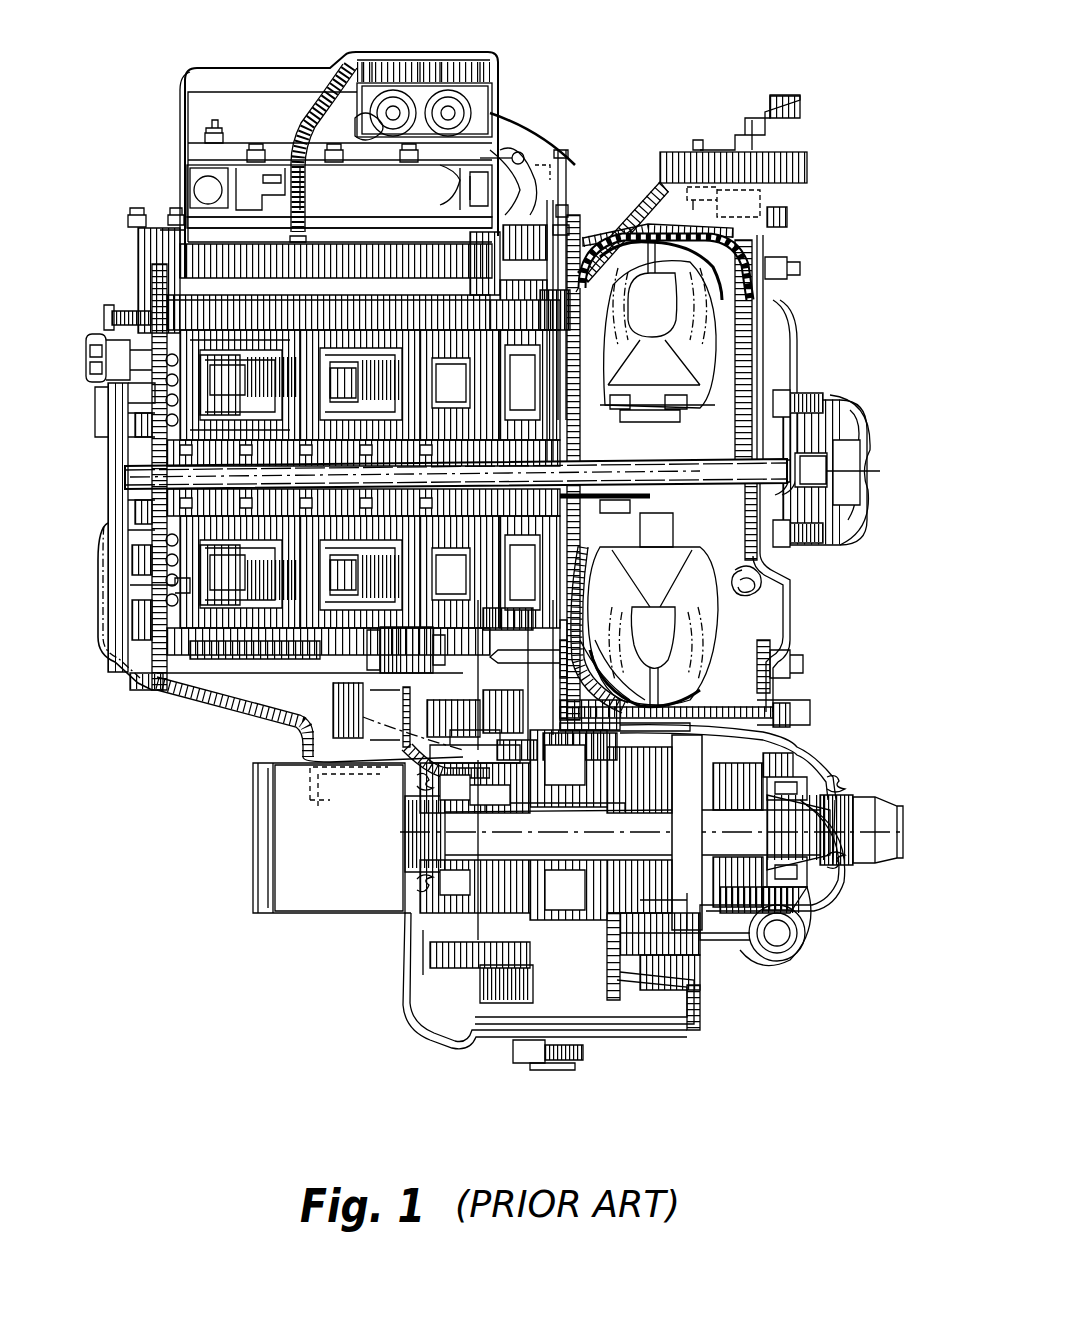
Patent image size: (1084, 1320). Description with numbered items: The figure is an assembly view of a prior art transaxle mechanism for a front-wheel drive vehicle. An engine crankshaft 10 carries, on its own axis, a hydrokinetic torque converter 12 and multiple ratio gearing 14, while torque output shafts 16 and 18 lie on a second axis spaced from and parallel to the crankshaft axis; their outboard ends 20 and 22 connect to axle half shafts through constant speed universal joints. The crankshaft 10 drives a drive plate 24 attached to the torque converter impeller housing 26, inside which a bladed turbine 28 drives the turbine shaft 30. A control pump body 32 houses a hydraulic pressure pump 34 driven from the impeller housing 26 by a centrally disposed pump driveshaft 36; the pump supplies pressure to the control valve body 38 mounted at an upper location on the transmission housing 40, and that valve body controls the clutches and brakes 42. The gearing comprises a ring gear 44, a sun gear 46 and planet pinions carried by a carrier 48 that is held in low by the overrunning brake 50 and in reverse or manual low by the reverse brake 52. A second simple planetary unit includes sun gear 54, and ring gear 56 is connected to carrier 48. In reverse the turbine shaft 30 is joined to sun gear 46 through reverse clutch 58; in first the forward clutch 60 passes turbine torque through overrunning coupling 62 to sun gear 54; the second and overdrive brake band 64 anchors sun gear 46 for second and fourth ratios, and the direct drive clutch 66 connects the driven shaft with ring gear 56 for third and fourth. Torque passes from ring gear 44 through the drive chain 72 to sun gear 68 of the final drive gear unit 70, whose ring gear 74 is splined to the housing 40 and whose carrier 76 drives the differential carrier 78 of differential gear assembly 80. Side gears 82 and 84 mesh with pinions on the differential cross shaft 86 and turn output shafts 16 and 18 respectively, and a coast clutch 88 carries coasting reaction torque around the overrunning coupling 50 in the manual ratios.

The crankshaft 10 is at (836, 455).
The hydrokinetic torque converter 12 is at (712, 322).
The multiple ratio gearing 14 is at (452, 272).
The torque output shaft 16 is at (792, 815).
The torque output shaft 18 is at (500, 848).
The outboard end 20 is at (880, 870).
The outboard end 22 is at (310, 913).
The drive plate 24 is at (780, 325).
The torque converter impeller housing 26 is at (676, 215).
The bladed turbine 28 is at (690, 255).
The turbine shaft 30 is at (492, 648).
The transmission case 32 is at (106, 447).
The hydraulic pressure pump 34 is at (138, 522).
The pump driveshaft 36 is at (162, 557).
The control valve body 38 is at (256, 110).
The transmission housing 40 is at (595, 240).
The clutches and brakes 42 is at (262, 600).
The ring gear 44 is at (520, 152).
The sun gear 46 is at (563, 148).
The carrier 48 is at (398, 312).
The overrunning brake 50 is at (352, 325).
The reverse brake 52 is at (322, 334).
The sun gear 54 is at (464, 618).
The ring gear 56 is at (402, 272).
The reverse clutch 58 is at (165, 300).
The forward clutch 60 is at (252, 332).
The overrunning coupling 62 is at (226, 332).
The second and overdrive brake band 64 is at (172, 642).
The direct drive clutch 66 is at (152, 340).
The sun gear 68 is at (760, 905).
The final drive gear unit 70 is at (512, 1000).
The drive chain 72 is at (492, 985).
The ring gear 74 is at (600, 985).
The carrier 76 is at (675, 990).
The differential carrier 78 is at (745, 935).
The differential gear assembly 80 is at (775, 712).
The side gear 82 is at (760, 745).
The side gear 84 is at (705, 912).
The differential cross shaft 86 is at (795, 920).
The coast clutch 88 is at (350, 632).